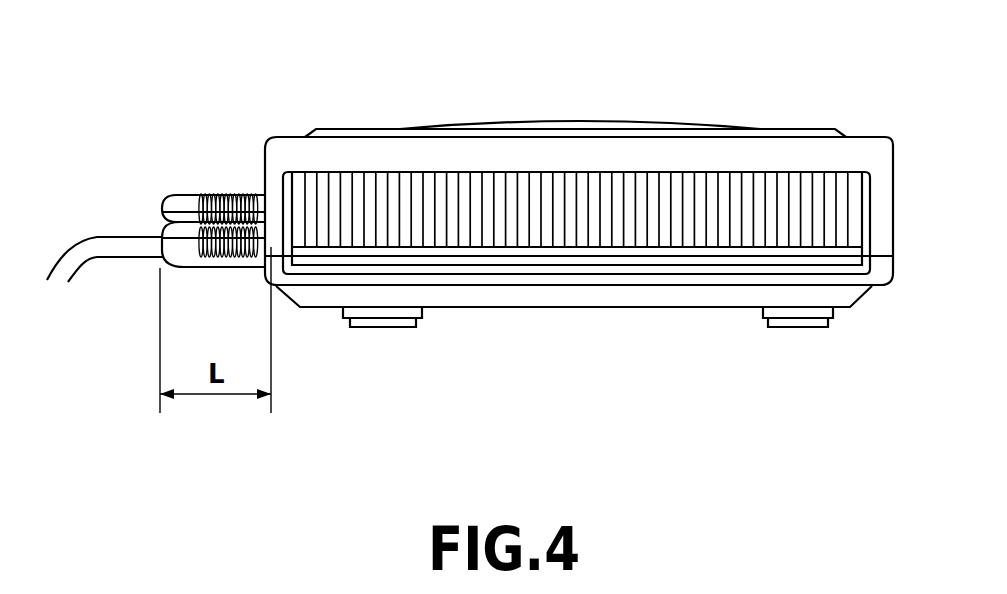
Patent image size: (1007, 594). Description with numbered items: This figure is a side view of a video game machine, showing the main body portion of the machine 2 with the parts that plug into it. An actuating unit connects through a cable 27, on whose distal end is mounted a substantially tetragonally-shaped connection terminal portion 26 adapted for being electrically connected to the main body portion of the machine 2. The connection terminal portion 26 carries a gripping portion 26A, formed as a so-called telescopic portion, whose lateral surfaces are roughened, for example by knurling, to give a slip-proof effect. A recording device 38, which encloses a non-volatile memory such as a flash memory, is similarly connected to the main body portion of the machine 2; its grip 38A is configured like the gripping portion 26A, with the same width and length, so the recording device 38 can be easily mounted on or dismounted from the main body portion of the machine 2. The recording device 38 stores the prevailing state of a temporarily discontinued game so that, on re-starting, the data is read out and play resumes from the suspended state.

The main body portion of the machine 2 is at (615, 101).
The connection terminal portion 26 is at (257, 355).
The gripping portion 26A is at (189, 269).
The cable 27 is at (123, 237).
The recording device 38 is at (186, 195).
The grip 38A is at (240, 193).